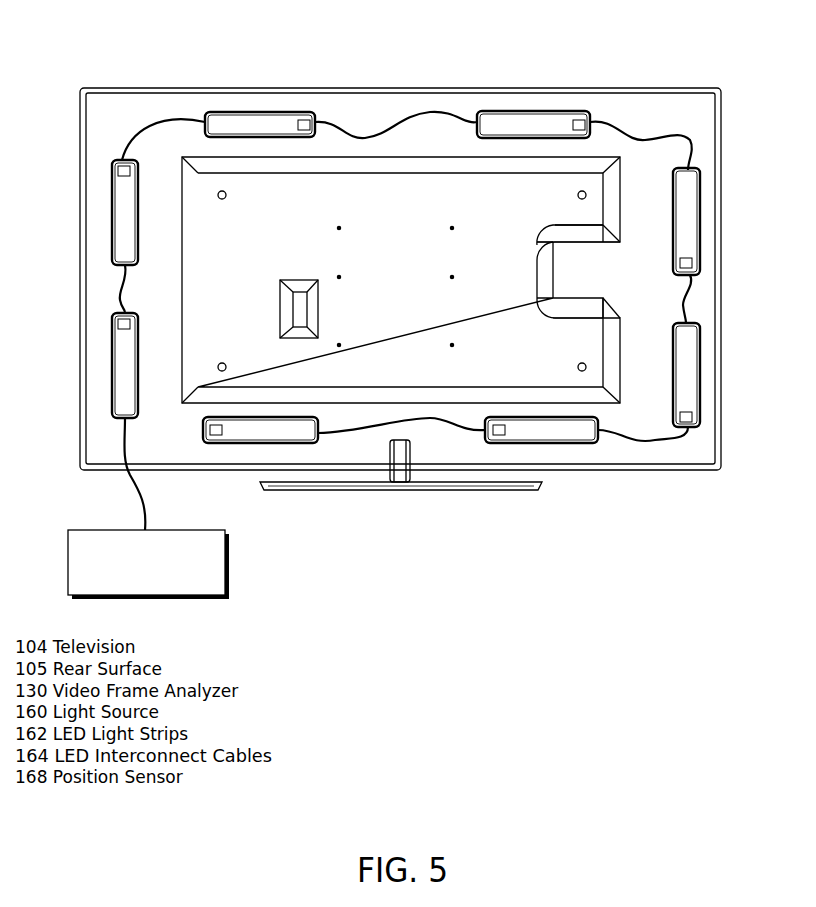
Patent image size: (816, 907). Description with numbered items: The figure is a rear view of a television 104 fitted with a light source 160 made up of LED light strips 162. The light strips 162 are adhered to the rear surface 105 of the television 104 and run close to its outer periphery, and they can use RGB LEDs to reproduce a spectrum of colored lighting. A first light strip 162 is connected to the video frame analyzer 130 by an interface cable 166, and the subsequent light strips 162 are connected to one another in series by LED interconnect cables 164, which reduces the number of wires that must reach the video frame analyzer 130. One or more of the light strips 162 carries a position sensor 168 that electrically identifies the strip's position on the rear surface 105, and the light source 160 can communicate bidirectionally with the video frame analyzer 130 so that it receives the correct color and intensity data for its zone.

The television 104 is at (380, 88).
The rear surface 105 is at (180, 417).
The video frame analyzer 130 is at (68, 530).
The light source 160 is at (557, 88).
The LED light strips 162 is at (112, 203).
The LED interconnect cables 164 is at (143, 137).
The interface cable 166 is at (120, 422).
The position sensor 168 is at (130, 170).